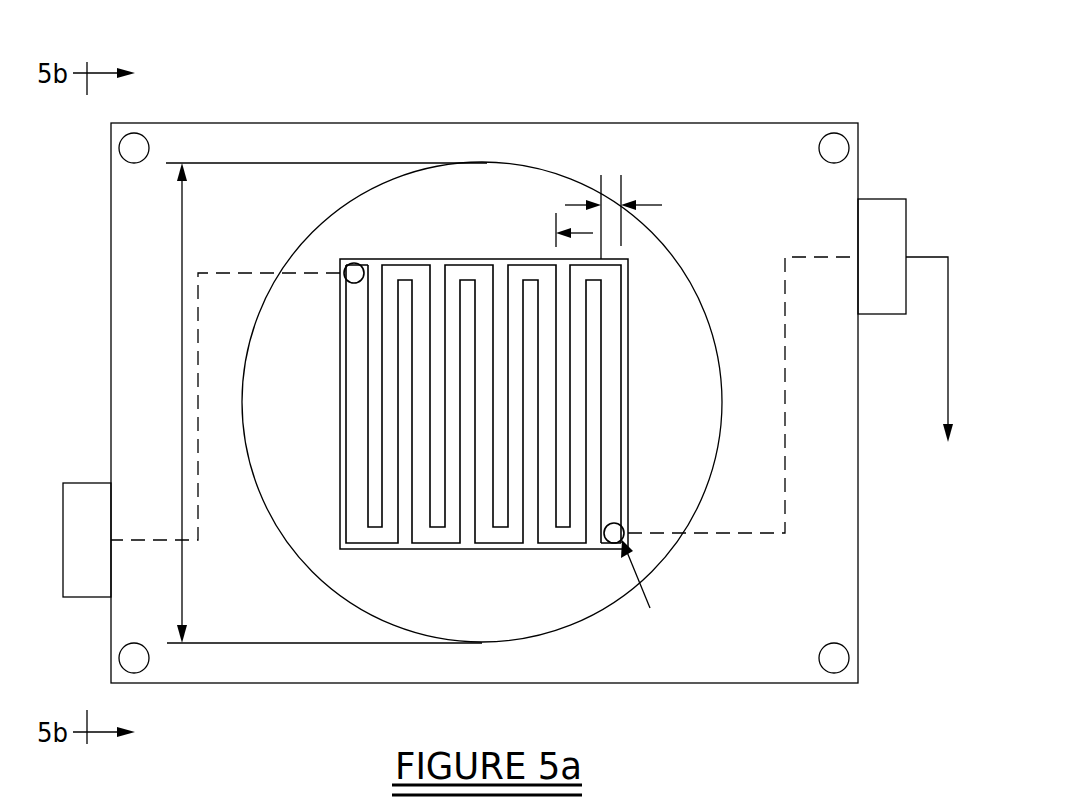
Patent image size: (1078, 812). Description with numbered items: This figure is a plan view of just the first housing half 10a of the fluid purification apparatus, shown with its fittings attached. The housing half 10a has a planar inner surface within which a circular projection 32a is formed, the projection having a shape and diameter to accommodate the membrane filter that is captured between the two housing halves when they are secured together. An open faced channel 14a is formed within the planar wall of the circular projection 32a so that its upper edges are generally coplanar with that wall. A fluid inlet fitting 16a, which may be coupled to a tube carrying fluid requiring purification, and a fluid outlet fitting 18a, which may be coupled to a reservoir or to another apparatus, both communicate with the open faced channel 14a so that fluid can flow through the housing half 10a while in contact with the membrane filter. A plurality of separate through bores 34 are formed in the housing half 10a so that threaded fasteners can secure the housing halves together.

The housing half 10a is at (680, 92).
The open faced channel 14a is at (357, 513).
The fluid inlet fitting 16a is at (75, 490).
The fluid outlet fitting 18a is at (878, 208).
The circular projection 32a is at (677, 318).
The through bores 34 is at (835, 663).